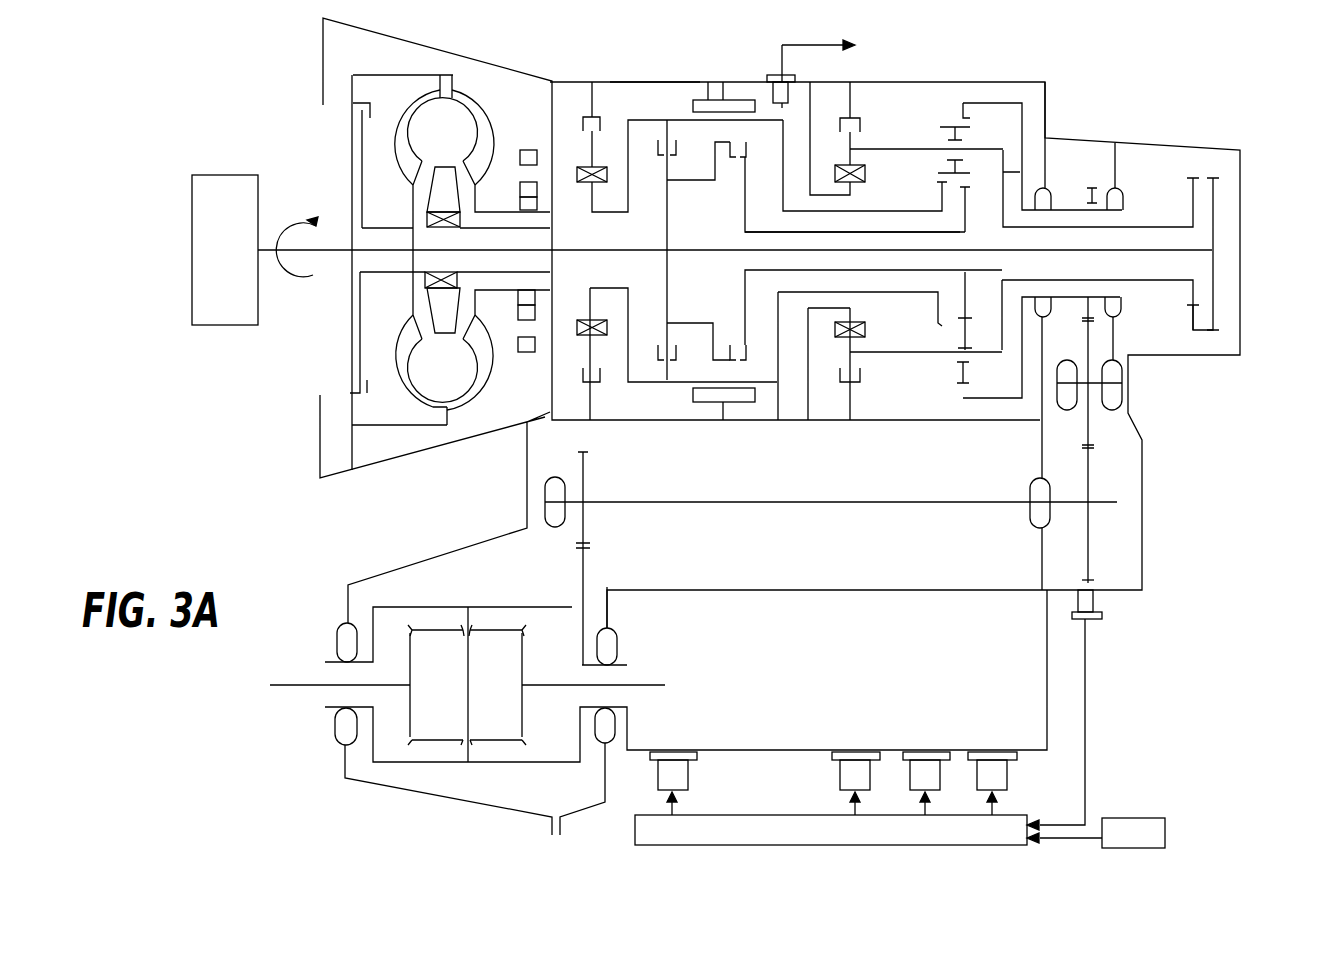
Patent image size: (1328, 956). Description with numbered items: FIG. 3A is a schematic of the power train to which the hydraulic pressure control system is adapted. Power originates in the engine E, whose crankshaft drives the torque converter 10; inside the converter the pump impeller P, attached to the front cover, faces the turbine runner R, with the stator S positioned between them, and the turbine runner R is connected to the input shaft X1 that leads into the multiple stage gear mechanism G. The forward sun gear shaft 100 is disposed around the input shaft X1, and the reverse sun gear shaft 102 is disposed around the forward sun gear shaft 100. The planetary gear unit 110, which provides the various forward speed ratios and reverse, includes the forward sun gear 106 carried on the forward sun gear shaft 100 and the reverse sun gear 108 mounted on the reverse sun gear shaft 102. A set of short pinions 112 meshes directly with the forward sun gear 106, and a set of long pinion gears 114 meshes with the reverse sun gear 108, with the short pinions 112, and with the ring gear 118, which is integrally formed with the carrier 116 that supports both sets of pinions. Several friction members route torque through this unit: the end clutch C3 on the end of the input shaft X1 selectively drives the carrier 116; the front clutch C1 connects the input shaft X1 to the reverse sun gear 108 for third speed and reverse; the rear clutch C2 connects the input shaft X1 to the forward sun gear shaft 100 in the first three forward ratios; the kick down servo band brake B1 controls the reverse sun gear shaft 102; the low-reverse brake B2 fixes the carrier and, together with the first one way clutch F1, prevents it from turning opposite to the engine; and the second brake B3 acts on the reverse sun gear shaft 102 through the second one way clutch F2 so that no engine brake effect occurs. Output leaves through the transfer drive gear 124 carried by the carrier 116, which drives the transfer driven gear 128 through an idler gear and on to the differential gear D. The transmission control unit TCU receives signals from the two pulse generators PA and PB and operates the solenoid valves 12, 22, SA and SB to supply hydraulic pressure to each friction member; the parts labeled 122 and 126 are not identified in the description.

The torque converter 10 is at (445, 90).
The solenoid valve 12 is at (673, 783).
The solenoid valve 22 is at (992, 783).
The forward sun gear shaft 100 is at (760, 230).
The reverse sun gear shaft 102 is at (945, 210).
The forward sun gear 106 is at (968, 318).
The reverse sun gear 108 is at (940, 325).
The planetary gear unit 110 is at (958, 168).
The short pinions 112 is at (960, 375).
The long pinion gears 114 is at (945, 125).
The carrier 116 is at (1020, 172).
The ring gear 118 is at (970, 103).
The transmission housing 122 is at (667, 80).
The transfer drive gear 124 is at (1095, 318).
The transfer gear 126 is at (1085, 447).
The transfer driven gear 128 is at (1085, 578).
The engine E is at (702, 250).
The turbine runner R is at (395, 125).
The pump impeller P is at (490, 118).
The sun gear S is at (440, 178).
The kick down servo band brake B1 is at (710, 82).
The low-reverse brake B2 is at (855, 118).
The 2nd brake B3 is at (598, 84).
The front clutch C1 is at (660, 122).
The rear clutch C2 is at (733, 143).
The end clutch C3 is at (1200, 178).
The first one way clutch F1 is at (866, 172).
The second one way clutch F2 is at (582, 195).
The input shaft X1 is at (638, 250).
The pulse generator PA is at (825, 70).
The speed sensor PB is at (1092, 615).
The gear unit G is at (1268, 266).
The differential gear D is at (307, 751).
The solenoid valve SA is at (856, 783).
The solenoid valve SB is at (926, 783).
The transmission control unit TCU is at (900, 831).